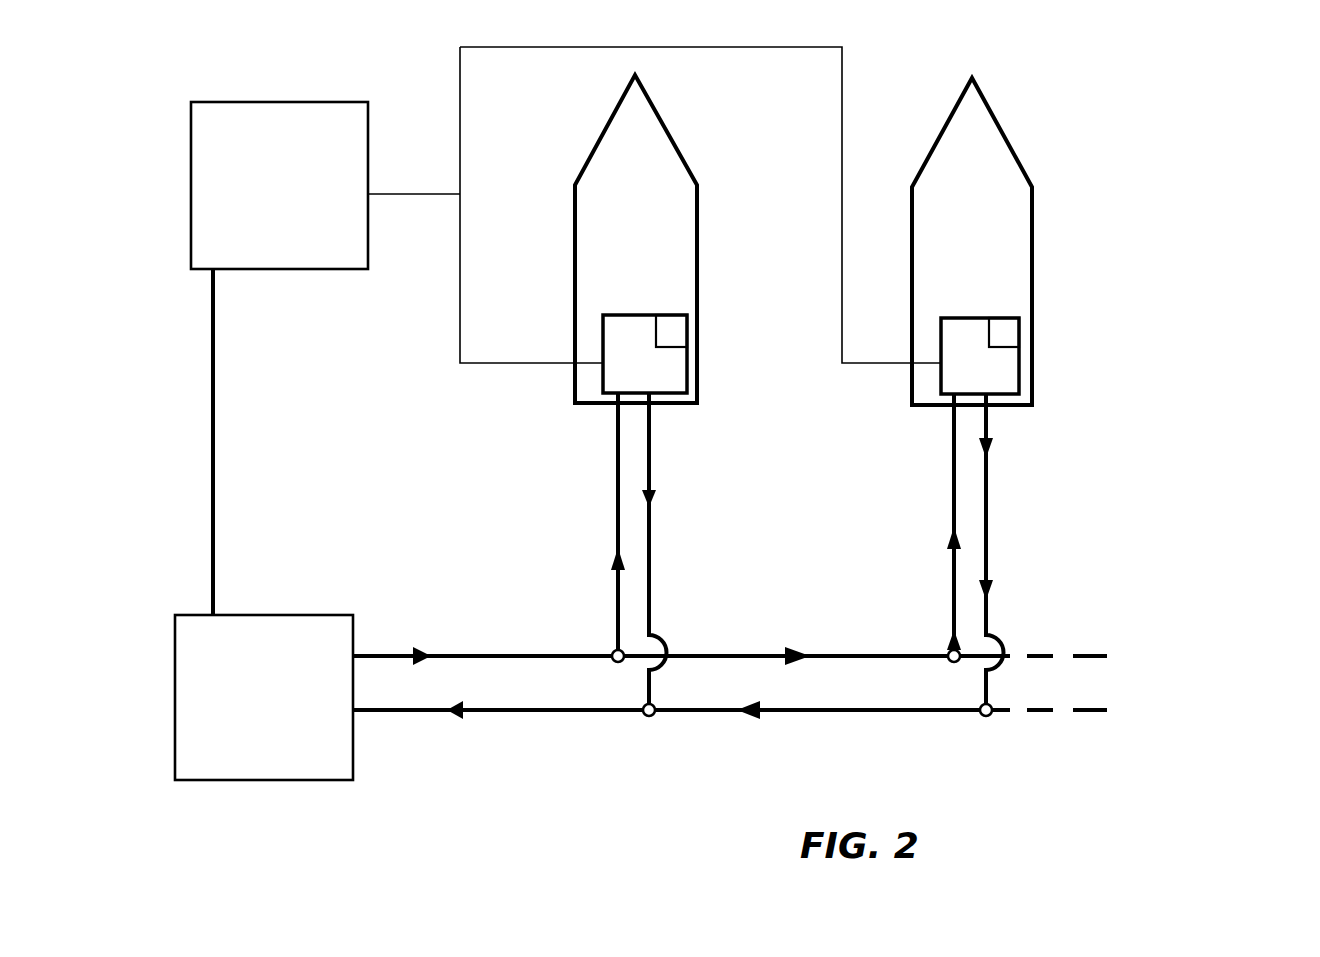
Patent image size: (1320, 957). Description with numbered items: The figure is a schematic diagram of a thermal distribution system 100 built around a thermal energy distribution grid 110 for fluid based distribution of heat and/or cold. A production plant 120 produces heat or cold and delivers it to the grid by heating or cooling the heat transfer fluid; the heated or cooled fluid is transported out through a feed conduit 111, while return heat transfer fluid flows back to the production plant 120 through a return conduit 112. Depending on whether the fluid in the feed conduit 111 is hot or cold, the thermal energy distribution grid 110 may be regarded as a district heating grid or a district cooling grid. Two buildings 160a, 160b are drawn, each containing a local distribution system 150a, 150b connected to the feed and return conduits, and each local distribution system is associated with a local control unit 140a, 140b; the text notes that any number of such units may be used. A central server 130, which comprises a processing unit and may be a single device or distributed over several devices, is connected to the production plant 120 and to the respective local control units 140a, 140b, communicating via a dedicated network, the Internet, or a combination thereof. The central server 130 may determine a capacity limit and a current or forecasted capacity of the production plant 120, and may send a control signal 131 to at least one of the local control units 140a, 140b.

The thermal distribution system 100 is at (1138, 145).
The thermal energy distribution grid 110 is at (707, 637).
The feed conduit 111 is at (383, 655).
The return conduit 112 is at (440, 713).
The production plant 120 is at (250, 780).
The central server 130 is at (342, 130).
The control signal 131 is at (413, 193).
The local control unit 140a is at (670, 333).
The local control unit 140b is at (1003, 337).
The local distribution system 150a is at (647, 350).
The local distribution system 150b is at (1012, 378).
The building 160a is at (668, 128).
The building 160b is at (1000, 123).